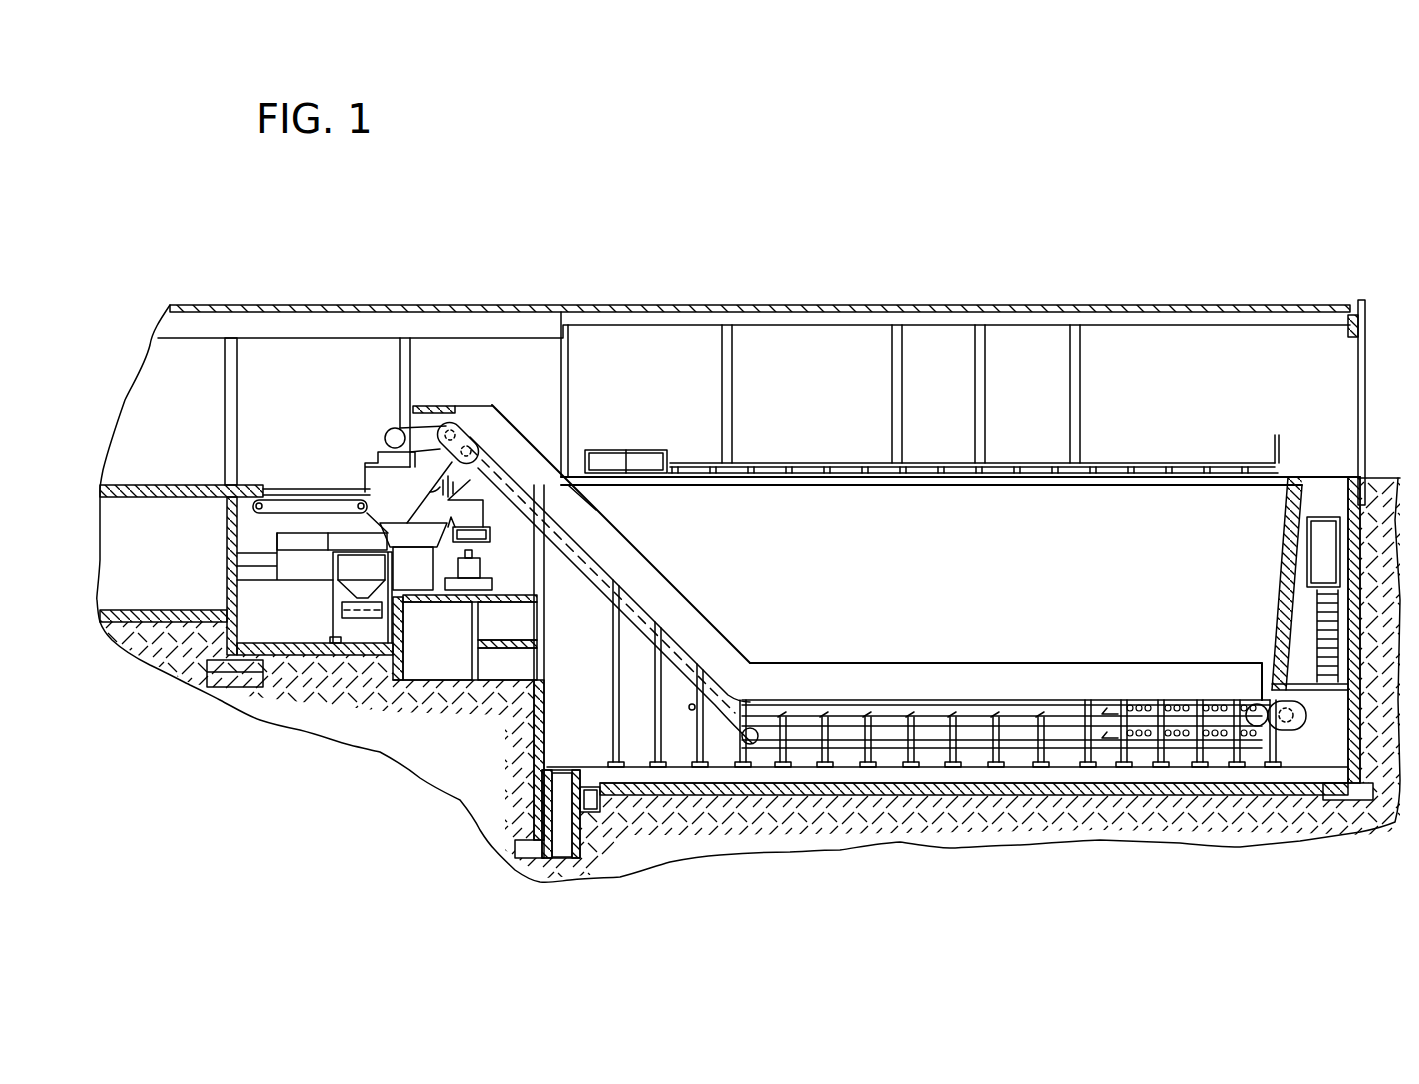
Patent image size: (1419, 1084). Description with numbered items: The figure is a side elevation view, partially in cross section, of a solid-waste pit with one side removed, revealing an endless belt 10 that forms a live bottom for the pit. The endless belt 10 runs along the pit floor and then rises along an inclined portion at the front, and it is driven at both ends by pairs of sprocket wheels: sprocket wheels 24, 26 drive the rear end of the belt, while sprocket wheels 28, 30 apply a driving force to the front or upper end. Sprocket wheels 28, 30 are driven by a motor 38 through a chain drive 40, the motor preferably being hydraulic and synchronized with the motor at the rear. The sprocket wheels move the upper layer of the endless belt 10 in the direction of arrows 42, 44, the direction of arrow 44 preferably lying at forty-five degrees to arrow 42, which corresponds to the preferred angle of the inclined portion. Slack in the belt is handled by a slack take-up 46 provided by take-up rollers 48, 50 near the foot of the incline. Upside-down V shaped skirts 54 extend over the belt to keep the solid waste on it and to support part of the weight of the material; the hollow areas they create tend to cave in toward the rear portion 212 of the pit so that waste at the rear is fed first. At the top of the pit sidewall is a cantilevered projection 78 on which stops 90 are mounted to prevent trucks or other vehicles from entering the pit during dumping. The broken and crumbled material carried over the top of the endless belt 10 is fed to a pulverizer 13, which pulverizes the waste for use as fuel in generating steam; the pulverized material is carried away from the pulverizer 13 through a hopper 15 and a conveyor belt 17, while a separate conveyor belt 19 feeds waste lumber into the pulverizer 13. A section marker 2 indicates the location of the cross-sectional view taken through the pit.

The endless belt 10 is at (1293, 726).
The pulverizer 13 is at (425, 548).
The hopper 15 is at (340, 592).
The conveyor belt 17 is at (352, 612).
The conveyor belt 19 is at (272, 513).
The sprocket wheel 24 is at (1258, 705).
The sprocket wheel 26 is at (1300, 710).
The sprocket wheel 28 is at (488, 433).
The sprocket wheel 30 is at (452, 430).
The motor 38 is at (393, 430).
The chain drive 40 is at (403, 425).
The arrow 42 is at (972, 655).
The arrow 44 is at (675, 553).
The slack take-up 46 is at (742, 737).
The take-up roller 48 is at (690, 708).
The take-up roller 50 is at (752, 722).
The skirt 54 is at (856, 663).
The cantilevered projection 78 is at (958, 485).
The stop 90 is at (798, 462).
The rear portion 212 is at (1240, 625).
The section line 2- 2 is at (1147, 648).